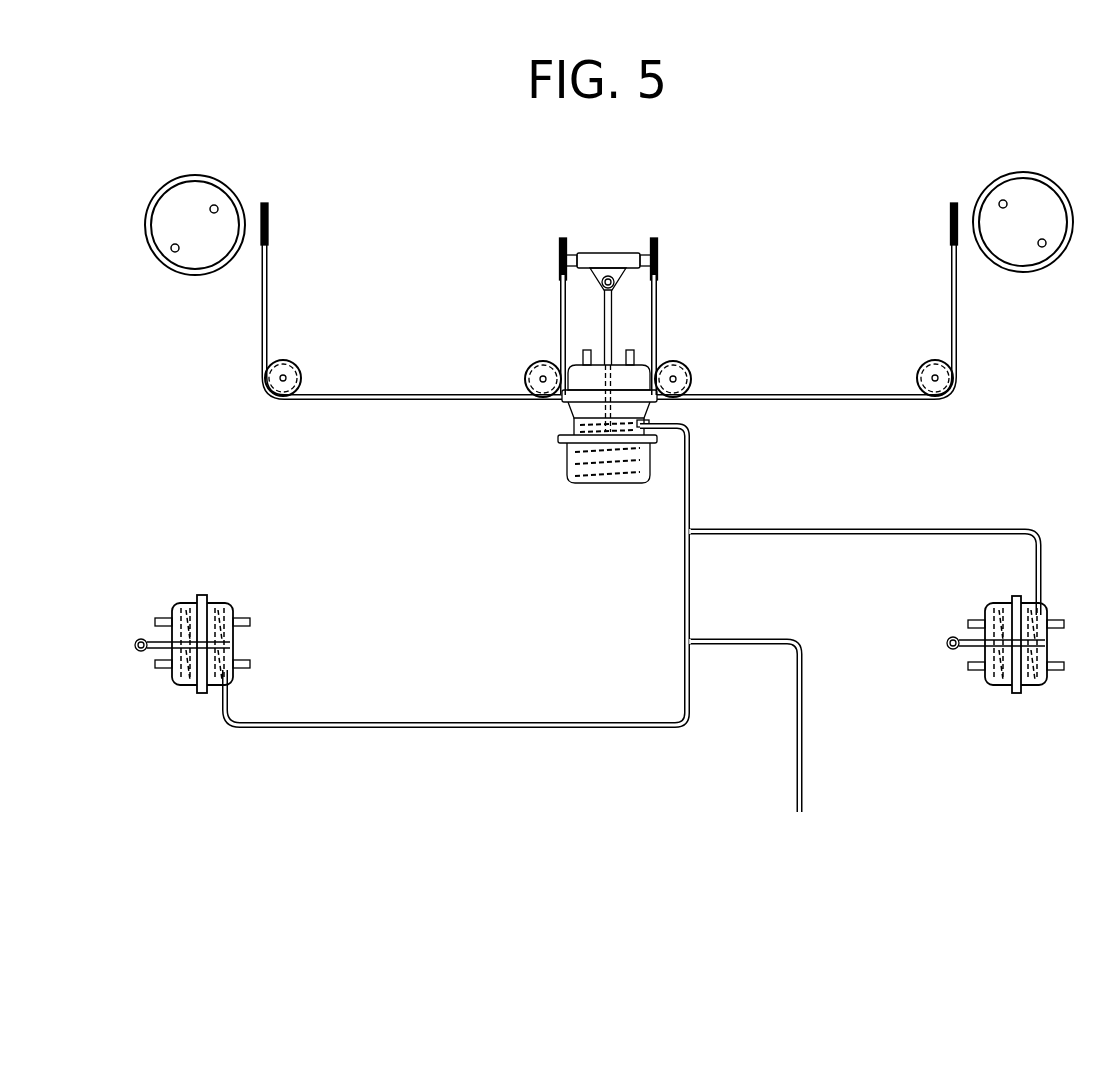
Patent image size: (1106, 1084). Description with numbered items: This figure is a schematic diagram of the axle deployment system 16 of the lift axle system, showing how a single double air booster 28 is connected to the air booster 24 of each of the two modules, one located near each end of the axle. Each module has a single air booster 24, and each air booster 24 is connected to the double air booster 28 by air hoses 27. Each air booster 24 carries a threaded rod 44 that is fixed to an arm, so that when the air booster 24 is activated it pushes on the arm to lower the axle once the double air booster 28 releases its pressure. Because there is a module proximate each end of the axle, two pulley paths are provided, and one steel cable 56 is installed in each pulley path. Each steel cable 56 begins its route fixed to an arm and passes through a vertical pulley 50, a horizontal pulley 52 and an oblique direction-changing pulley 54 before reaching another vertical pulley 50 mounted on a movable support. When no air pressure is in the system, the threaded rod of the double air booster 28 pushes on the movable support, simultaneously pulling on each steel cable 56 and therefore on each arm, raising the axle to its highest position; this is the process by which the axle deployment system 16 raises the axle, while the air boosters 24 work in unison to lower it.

The axle deployment system 16 is at (564, 770).
The air booster 24 is at (228, 612).
The air hose 27 is at (683, 560).
The double air booster 28 is at (560, 458).
The threaded rod 44 is at (142, 638).
The vertical pulley 50 is at (268, 212).
The horizontal pulley 52 is at (296, 364).
The oblique direction-changing pulley 54 is at (528, 368).
The steel cable 56 is at (260, 305).